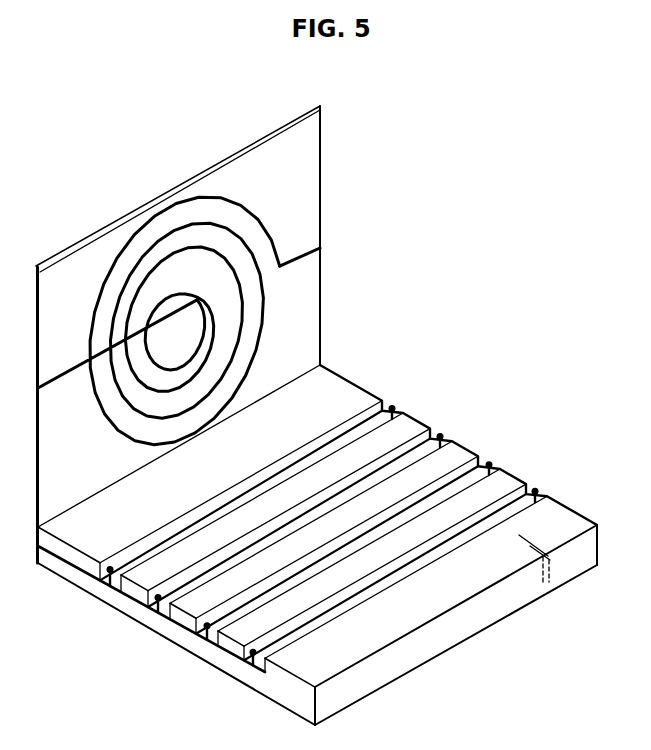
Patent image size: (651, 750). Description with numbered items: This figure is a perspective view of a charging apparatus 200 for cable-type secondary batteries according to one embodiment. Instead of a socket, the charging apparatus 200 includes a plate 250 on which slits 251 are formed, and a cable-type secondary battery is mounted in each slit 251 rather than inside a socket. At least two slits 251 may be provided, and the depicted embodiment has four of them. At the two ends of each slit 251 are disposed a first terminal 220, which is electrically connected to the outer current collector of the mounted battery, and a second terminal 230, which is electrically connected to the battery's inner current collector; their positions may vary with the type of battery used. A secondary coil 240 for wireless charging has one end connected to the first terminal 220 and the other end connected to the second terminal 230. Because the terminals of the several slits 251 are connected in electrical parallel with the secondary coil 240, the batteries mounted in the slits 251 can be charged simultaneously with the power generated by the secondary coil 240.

The charging apparatus 200 is at (470, 129).
The first terminal 220 is at (441, 428).
The second terminal 230 is at (158, 601).
The secondary coil for wireless charging 240 is at (230, 197).
The plate 250 is at (330, 545).
The slit 251 is at (503, 495).